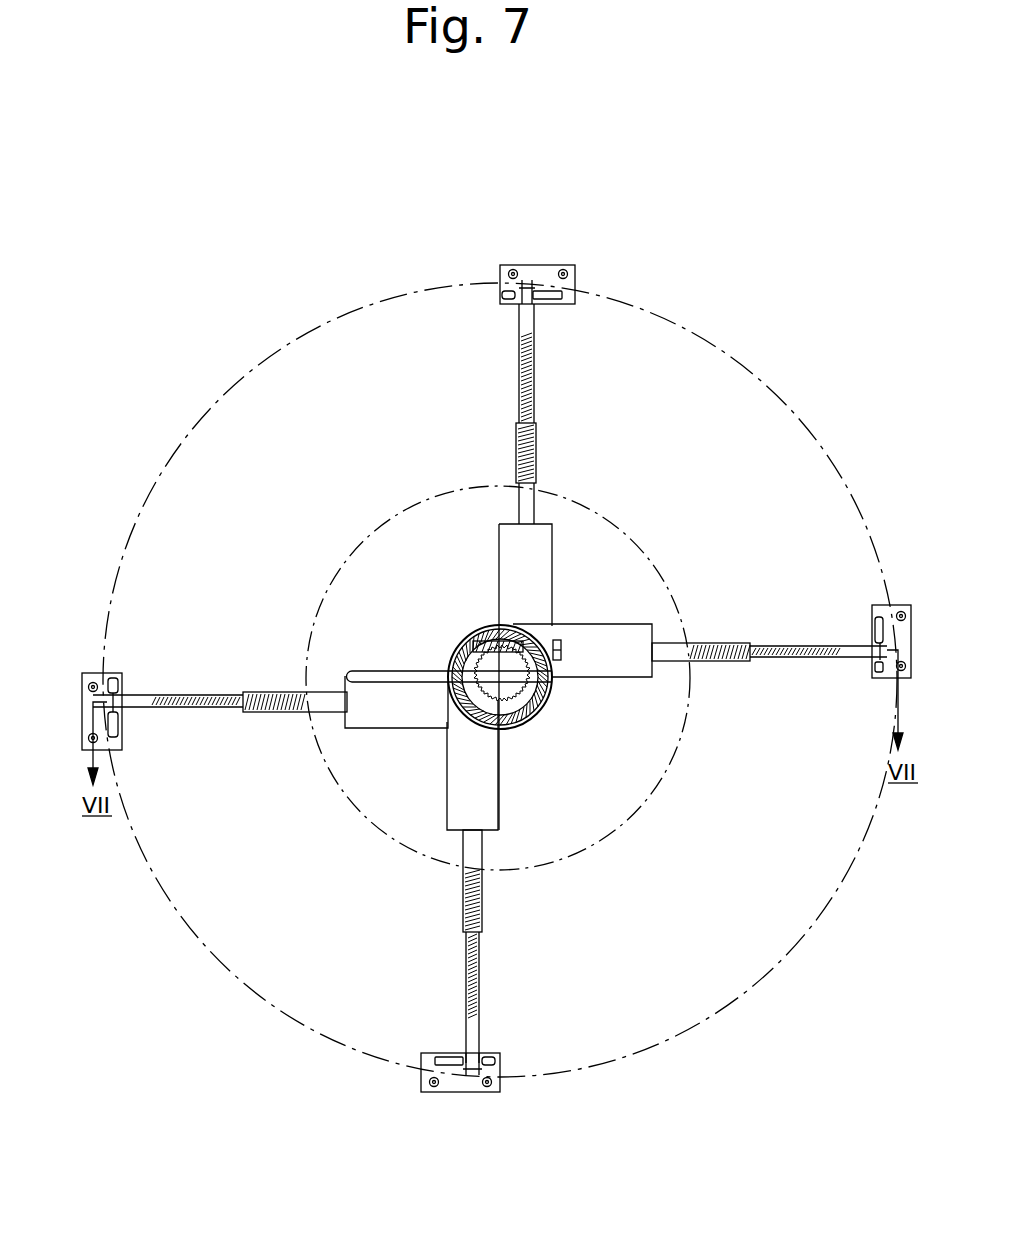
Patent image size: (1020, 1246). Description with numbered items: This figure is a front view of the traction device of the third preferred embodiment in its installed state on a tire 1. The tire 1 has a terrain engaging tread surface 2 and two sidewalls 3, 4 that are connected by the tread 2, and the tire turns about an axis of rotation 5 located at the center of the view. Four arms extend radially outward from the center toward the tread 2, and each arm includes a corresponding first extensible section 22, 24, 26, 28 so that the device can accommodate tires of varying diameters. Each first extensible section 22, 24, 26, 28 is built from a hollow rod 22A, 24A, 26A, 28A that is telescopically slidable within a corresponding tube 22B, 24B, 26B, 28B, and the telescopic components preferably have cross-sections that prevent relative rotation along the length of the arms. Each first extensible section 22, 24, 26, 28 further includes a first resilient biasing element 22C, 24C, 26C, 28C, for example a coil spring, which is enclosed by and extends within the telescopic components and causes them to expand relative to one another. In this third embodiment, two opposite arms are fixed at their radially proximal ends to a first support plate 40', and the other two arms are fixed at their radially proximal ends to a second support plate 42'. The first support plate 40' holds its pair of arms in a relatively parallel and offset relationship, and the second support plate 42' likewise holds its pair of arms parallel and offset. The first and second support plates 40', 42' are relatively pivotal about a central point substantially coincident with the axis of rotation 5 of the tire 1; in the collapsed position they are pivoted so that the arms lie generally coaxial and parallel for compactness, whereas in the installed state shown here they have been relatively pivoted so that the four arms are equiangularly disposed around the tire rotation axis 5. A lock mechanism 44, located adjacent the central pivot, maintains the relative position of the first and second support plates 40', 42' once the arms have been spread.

The tire 1 is at (198, 310).
The terrain engaging tread surface 2 is at (302, 333).
The sidewall 3 is at (350, 325).
The sidewall 4 is at (463, 303).
The axis of rotation 5 is at (500, 677).
The first extensible section 22 is at (434, 414).
The hollow rod 22A is at (517, 410).
The tube 22B is at (517, 460).
The first resilient biasing element 22C is at (517, 337).
The first extensible section 24 is at (781, 575).
The hollow rod 24A is at (768, 643).
The tube 24B is at (688, 640).
The first resilient biasing element 24C is at (827, 642).
The first extensible section 26 is at (544, 961).
The hollow rod 26A is at (478, 955).
The tube 26B is at (480, 895).
The first resilient biasing element 26C is at (480, 1018).
The first extensible section 28 is at (214, 636).
The hollow rod 28A is at (237, 693).
The tube 28B is at (283, 692).
The first resilient biasing element 28C is at (160, 692).
The first support plate 40' is at (582, 617).
The second support plate 42' is at (475, 677).
The lock mechanism 44 is at (560, 652).